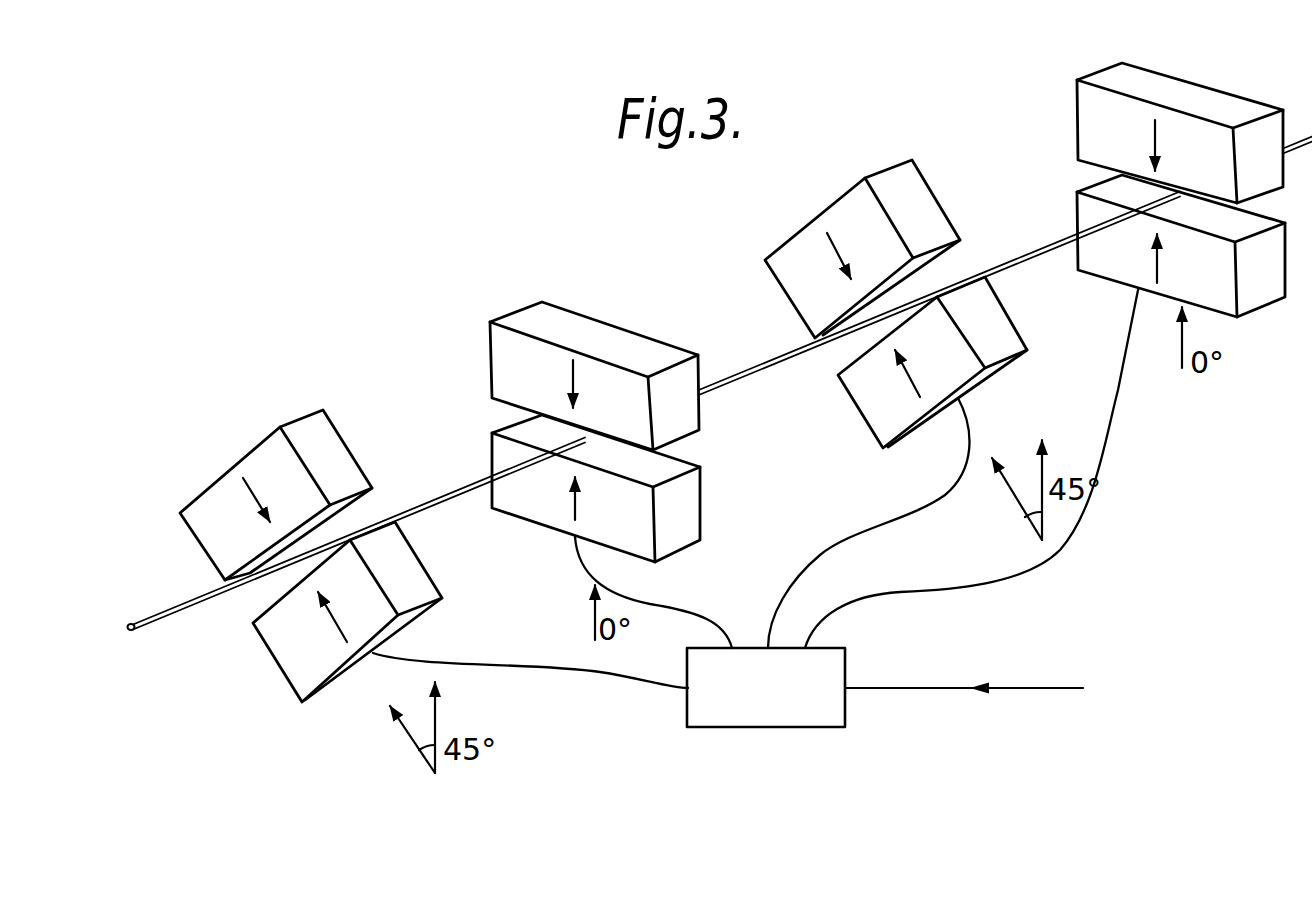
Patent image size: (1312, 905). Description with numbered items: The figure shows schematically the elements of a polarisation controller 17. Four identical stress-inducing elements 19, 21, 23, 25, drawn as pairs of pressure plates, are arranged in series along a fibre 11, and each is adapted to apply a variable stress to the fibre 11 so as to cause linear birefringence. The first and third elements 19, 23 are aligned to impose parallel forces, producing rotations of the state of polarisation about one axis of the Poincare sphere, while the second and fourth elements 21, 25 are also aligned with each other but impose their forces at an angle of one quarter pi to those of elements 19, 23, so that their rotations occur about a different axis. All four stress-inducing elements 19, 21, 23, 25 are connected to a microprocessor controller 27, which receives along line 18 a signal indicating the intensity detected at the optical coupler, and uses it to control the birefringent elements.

The fibre 11 is at (182, 607).
The polarisation controller 17 is at (470, 300).
The line 18 is at (1055, 688).
The first stress-inducing element 19 is at (265, 443).
The second stress-inducing element 21 is at (578, 325).
The third stress-inducing element 23 is at (805, 243).
The fourth stress-inducing element 25 is at (1085, 100).
The microprocessor controller 27 is at (790, 703).